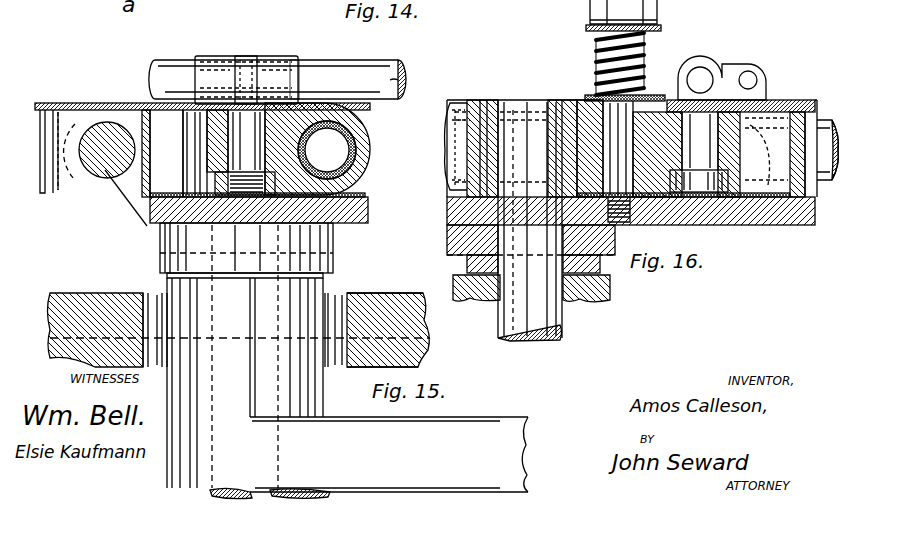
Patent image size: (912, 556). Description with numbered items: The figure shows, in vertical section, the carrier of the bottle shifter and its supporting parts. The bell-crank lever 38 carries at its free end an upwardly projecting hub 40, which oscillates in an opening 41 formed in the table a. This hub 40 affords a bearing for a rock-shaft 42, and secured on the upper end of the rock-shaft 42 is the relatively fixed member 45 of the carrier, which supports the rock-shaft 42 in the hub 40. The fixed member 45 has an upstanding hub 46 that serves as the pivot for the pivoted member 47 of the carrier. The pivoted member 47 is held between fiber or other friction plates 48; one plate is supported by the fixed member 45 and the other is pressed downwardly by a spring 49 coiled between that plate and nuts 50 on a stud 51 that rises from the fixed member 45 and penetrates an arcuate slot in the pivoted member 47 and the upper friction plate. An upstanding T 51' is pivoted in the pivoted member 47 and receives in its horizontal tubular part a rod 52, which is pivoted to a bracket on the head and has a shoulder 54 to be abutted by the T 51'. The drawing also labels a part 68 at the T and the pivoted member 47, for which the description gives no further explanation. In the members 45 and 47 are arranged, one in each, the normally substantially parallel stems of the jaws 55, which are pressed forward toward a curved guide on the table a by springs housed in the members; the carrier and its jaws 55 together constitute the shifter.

In FIG. 15, the bell-crank lever 38 is at (470, 427).
In FIG. 15, the hub 40 is at (312, 305).
In FIG. 16, the hub 40 is at (612, 292).
In FIG. 15, the opening 41 is at (157, 305).
In FIG. 15, the rock-shaft 42 is at (212, 495).
In FIG. 16, the rock-shaft 42 is at (563, 327).
In FIG. 15, the fixed member 45 is at (162, 229).
In FIG. 16, the fixed member 45 is at (452, 222).
In FIG. 16, the upstanding hub 46 is at (493, 101).
In FIG. 15, the pivoted member 47 is at (362, 156).
In FIG. 16, the pivoted member 47 is at (745, 106).
In FIG. 16, the friction plates 48 is at (671, 97).
In FIG. 16, the spring 49 is at (596, 62).
In FIG. 16, the nuts 50 is at (648, 20).
In FIG. 16, the stud 51 is at (618, 161).
In FIG. 15, the T 51' is at (242, 66).
In FIG. 16, the T 51' is at (699, 152).
In FIG. 15, the rod 52 is at (337, 64).
In FIG. 15, the shoulder 54 is at (300, 65).
In FIG. 15, the jaws 55 is at (105, 165).
In FIG. 16, the jaws 55 is at (828, 120).
In FIG. 15, the lug 68 is at (240, 75).
In FIG. 16, the lug 68 is at (756, 70).
In FIG. 15, the table a is at (392, 300).